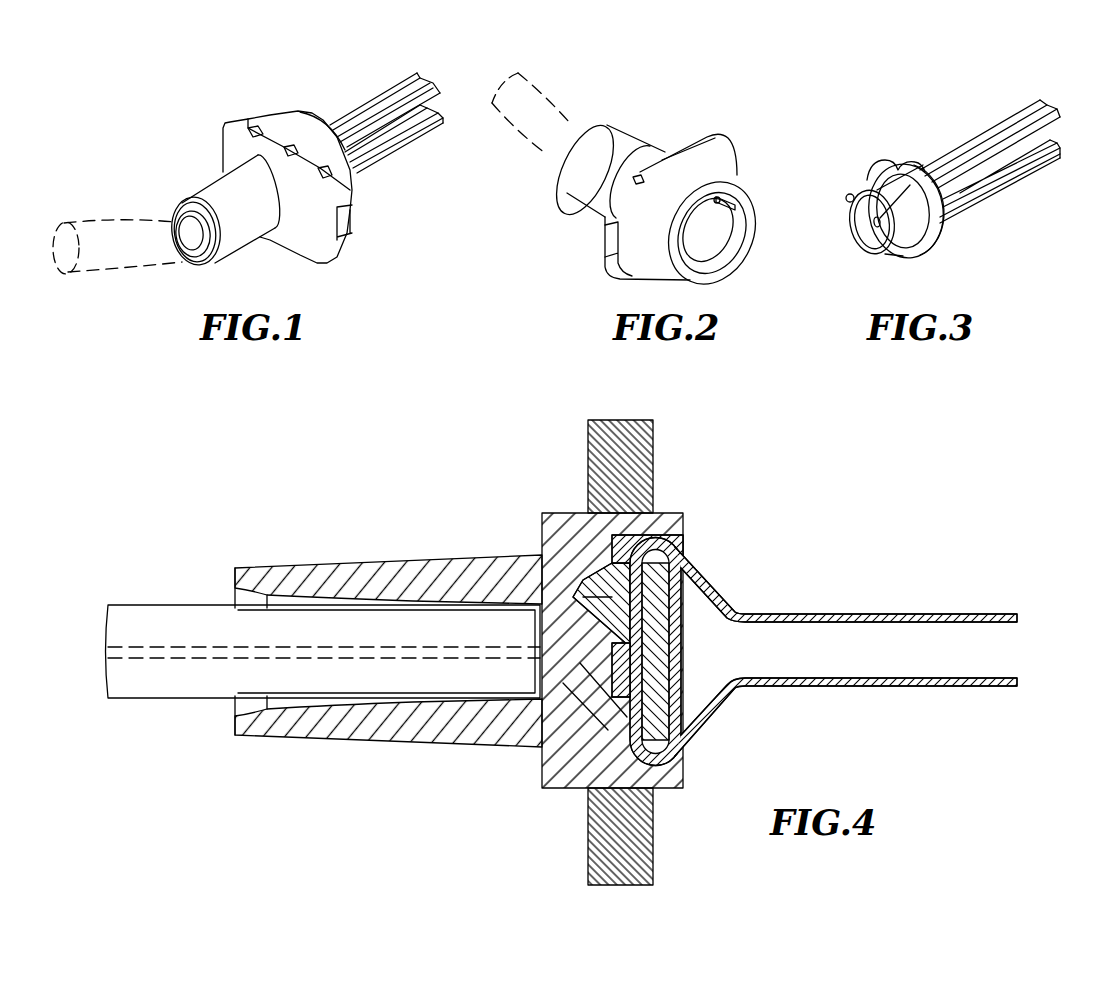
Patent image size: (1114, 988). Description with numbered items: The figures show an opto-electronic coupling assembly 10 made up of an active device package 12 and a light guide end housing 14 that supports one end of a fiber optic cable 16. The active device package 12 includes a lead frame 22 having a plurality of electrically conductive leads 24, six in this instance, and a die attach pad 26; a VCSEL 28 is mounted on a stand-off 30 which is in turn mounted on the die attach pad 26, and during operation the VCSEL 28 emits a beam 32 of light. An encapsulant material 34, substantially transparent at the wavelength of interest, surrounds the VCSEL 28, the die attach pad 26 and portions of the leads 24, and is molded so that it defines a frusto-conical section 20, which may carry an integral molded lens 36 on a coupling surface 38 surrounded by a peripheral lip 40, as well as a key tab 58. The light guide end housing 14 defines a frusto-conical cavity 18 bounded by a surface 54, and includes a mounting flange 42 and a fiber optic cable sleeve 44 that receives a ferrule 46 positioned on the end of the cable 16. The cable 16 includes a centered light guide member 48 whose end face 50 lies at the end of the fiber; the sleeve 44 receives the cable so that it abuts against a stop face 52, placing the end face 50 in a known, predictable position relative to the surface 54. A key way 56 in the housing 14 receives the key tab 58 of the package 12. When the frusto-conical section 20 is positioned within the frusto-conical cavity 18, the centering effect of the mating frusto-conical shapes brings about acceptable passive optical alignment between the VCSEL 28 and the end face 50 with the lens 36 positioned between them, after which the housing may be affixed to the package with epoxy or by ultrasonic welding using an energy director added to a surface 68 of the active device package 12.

In FIG. 1, the opto-electronic coupling assembly 10 is at (352, 73).
In FIG. 4, the opto-electronic coupling assembly 10 is at (770, 458).
In FIG. 1, the active device package 12 is at (312, 112).
In FIG. 3, the active device package 12 is at (955, 140).
In FIG. 4, the active device package 12 is at (689, 541).
In FIG. 1, the light guide end housing 14 is at (247, 118).
In FIG. 2, the light guide end housing 14 is at (729, 129).
In FIG. 4, the light guide end housing 14 is at (391, 553).
In FIG. 1, the fiber optic cable 16 is at (137, 275).
In FIG. 2, the fiber optic cable 16 is at (563, 107).
In FIG. 4, the fiber optic cable 16 is at (143, 700).
In FIG. 2, the frusto-conical cavity 18 is at (712, 262).
In FIG. 4, the frusto-conical cavity 18 is at (590, 560).
In FIG. 3, the frusto-conical section 20 is at (903, 243).
In FIG. 4, the frusto-conical section 20 is at (542, 752).
In FIG. 3, the lead frame 22 is at (987, 197).
In FIG. 4, the lead frame 22 is at (774, 611).
In FIG. 1, the electrically conductive leads 24 is at (438, 82).
In FIG. 3, the electrically conductive leads 24 is at (1057, 107).
In FIG. 4, the electrically conductive leads 24 is at (852, 677).
In FIG. 4, the die attach pad 26 is at (647, 627).
In FIG. 4, the VCSEL 28 is at (552, 793).
In FIG. 4, the stand-off 30 is at (637, 680).
In FIG. 4, the beam 32 is at (578, 600).
In FIG. 3, the encapsulant material 34 is at (933, 240).
In FIG. 4, the encapsulant material 34 is at (668, 533).
In FIG. 3, the molded lens 36 is at (873, 254).
In FIG. 4, the molded lens 36 is at (458, 703).
In FIG. 3, the coupling surface 38 is at (857, 245).
In FIG. 4, the coupling surface 38 is at (530, 710).
In FIG. 4, the peripheral lip 40 is at (545, 745).
In FIG. 1, the mounting flange 42 is at (342, 262).
In FIG. 2, the mounting flange 42 is at (607, 272).
In FIG. 4, the mounting flange 42 is at (605, 418).
In FIG. 1, the fiber optic cable sleeve 44 is at (198, 187).
In FIG. 2, the fiber optic cable sleeve 44 is at (580, 205).
In FIG. 4, the fiber optic cable sleeve 44 is at (282, 565).
In FIG. 4, the ferrule 46 is at (460, 700).
In FIG. 4, the light guide member 48 is at (157, 645).
In FIG. 4, the end face 50 is at (527, 647).
In FIG. 4, the stop face 52 is at (527, 687).
In FIG. 2, the surface 54 is at (723, 233).
In FIG. 4, the surface 54 is at (585, 577).
In FIG. 2, the key way 56 is at (740, 215).
In FIG. 3, the key tab 58 is at (847, 195).
In FIG. 4, the surface 68 is at (603, 538).